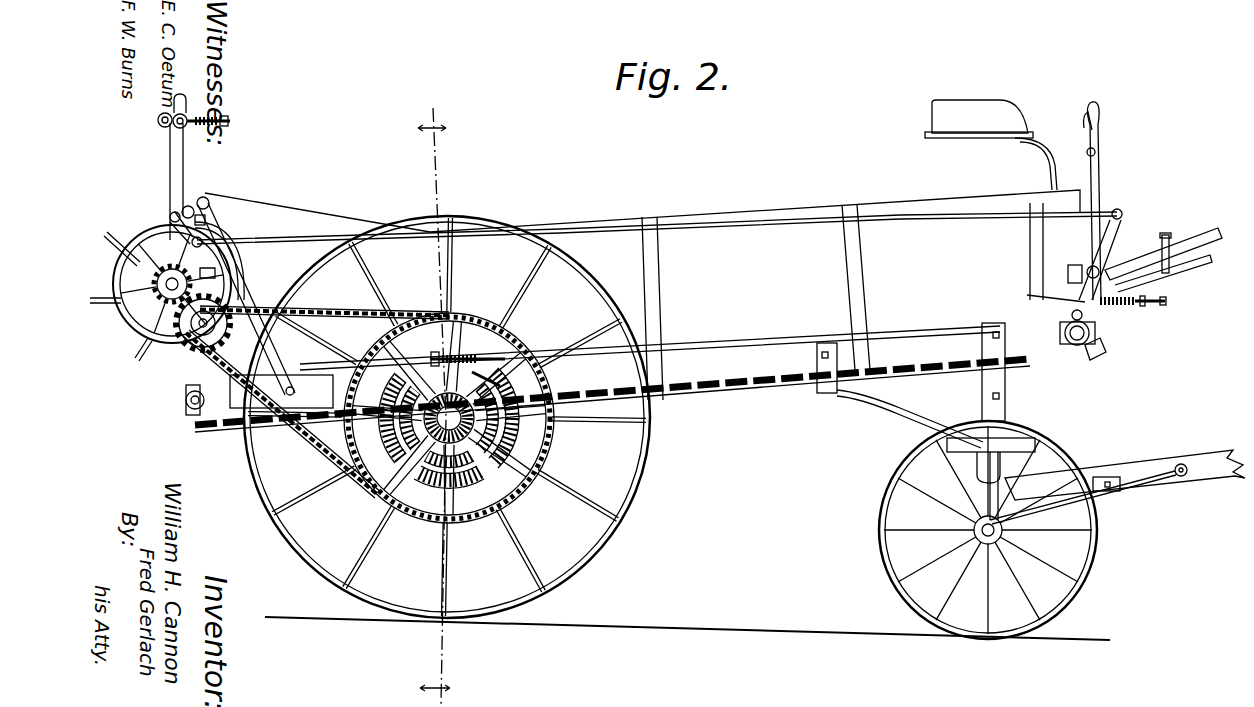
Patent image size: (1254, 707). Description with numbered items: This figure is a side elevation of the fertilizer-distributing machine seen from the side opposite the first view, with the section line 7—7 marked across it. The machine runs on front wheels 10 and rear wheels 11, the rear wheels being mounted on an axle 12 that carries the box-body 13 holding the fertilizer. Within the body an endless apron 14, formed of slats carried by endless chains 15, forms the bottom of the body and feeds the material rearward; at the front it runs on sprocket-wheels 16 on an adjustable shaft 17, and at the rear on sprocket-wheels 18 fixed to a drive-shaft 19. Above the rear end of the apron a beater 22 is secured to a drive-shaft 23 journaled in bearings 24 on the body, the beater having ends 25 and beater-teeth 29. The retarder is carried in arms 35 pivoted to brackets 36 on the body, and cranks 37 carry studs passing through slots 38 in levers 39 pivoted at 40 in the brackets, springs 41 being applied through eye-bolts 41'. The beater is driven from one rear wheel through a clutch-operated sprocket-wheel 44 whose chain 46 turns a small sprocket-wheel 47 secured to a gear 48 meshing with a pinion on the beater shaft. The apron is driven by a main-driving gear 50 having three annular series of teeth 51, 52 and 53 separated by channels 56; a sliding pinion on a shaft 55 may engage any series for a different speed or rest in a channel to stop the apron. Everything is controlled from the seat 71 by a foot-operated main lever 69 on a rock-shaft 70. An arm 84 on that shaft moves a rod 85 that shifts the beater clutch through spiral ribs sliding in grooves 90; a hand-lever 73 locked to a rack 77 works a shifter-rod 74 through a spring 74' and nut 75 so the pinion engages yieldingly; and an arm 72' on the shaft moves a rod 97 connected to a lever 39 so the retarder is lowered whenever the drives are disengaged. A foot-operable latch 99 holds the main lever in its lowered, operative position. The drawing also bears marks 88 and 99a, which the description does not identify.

The section line 7— 7 is at (434, 407).
The front wheels 10 is at (885, 484).
The rear wheels 11 is at (410, 622).
The axle 12 is at (424, 418).
The box-body 13 is at (637, 295).
The endless apron 14 is at (660, 393).
The endless chains 15 is at (768, 385).
The sprocket-wheels 16 is at (1102, 355).
The shaft 17 is at (1090, 340).
The sprocket-wheels 18 is at (184, 404).
The drive-shaft 19 is at (200, 420).
The beater 22 is at (168, 291).
The beater drive-shaft 23 is at (218, 275).
The bearings 24 is at (240, 262).
The beater ends 25 is at (140, 245).
The beater-teeth 29 is at (100, 305).
The arms 35 is at (172, 104).
The brackets 36 is at (213, 188).
The cranks 37 is at (188, 97).
The slots 38 is at (160, 127).
The levers 39 is at (183, 165).
The pivot 40 is at (170, 215).
The springs 41 is at (203, 110).
The eye-bolts 41' is at (261, 121).
The sprocket-wheel 44 is at (515, 505).
The chain 46 is at (315, 435).
The small sprocket-wheel 47 is at (203, 323).
The gear 48 is at (190, 342).
The main-driving gear 50 is at (507, 418).
The outer series of teeth 51 is at (425, 470).
The central series of teeth 52 is at (455, 487).
The inner series of teeth 53 is at (495, 470).
The shaft 55 is at (467, 448).
The channels 56 is at (393, 440).
The main-controlling lever 69 is at (1168, 238).
The cross-shaft 70 is at (1078, 272).
The seat 71 is at (985, 95).
The arm 72' is at (1133, 251).
The hand-lever 73 is at (1102, 160).
The shifter-rod 74 is at (1177, 314).
The spring 74' is at (1122, 320).
The nut 75 is at (1148, 308).
The rack 77 is at (1085, 236).
The arm 84 is at (1040, 296).
The rod 85 is at (757, 340).
The set screw 88 is at (478, 340).
The grooves 90 is at (1067, 309).
The rod 97 is at (215, 335).
The foot operable latch 99 is at (1190, 268).
The key 99a is at (494, 377).